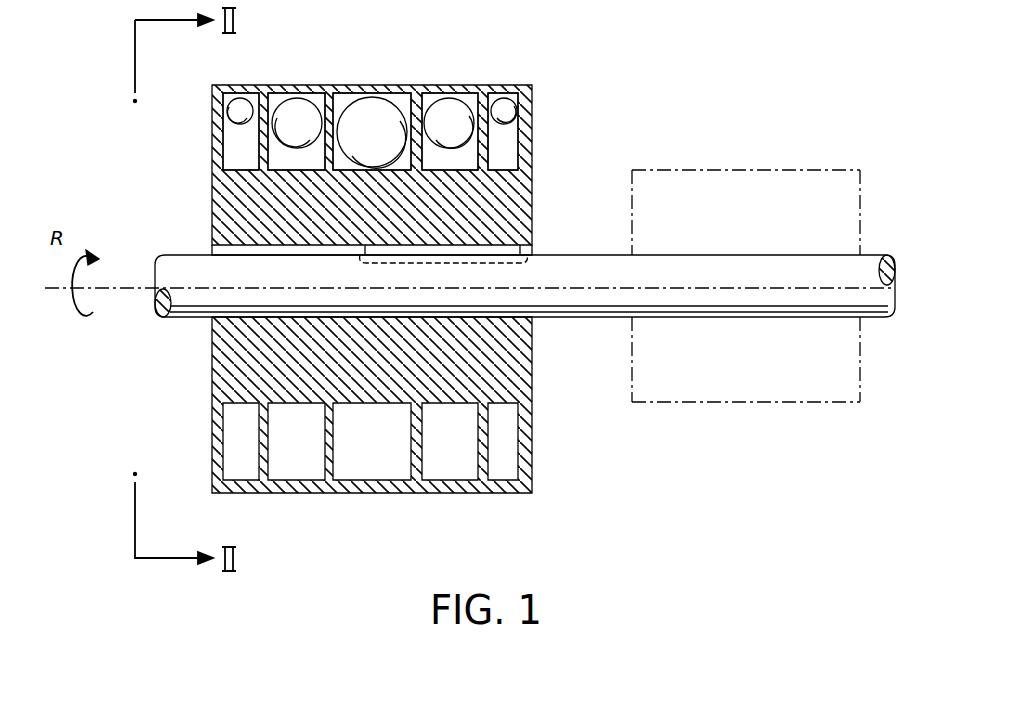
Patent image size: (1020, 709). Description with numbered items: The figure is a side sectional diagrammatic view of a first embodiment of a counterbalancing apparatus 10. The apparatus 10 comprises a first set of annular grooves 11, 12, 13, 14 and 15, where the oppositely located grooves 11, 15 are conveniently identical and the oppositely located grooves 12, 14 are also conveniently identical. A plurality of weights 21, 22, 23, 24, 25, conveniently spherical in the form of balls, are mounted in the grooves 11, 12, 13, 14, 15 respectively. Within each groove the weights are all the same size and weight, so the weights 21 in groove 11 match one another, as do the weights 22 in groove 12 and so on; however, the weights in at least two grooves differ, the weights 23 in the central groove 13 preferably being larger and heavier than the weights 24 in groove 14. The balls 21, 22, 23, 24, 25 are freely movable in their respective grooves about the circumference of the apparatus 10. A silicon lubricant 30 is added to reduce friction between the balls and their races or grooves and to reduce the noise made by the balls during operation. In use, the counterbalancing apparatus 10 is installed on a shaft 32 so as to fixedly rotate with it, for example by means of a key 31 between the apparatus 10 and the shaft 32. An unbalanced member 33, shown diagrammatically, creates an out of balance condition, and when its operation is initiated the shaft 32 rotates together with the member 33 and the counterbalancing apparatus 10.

The counterbalancing apparatus 10 is at (590, 56).
The annular groove 11 is at (238, 150).
The annular groove 12 is at (287, 163).
The annular groove 13 is at (343, 168).
The annular groove 14 is at (445, 165).
The annular groove 15 is at (508, 140).
The weights 21 is at (237, 105).
The weights 22 is at (293, 108).
The weights 23 is at (368, 105).
The weights 24 is at (448, 108).
The weights 25 is at (500, 108).
The silicon lubricant 30 is at (512, 157).
The key 31 is at (460, 252).
The shaft 32 is at (590, 300).
The unbalanced member 33 is at (753, 168).